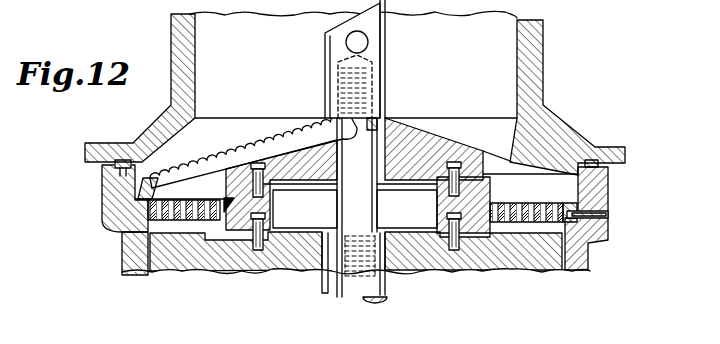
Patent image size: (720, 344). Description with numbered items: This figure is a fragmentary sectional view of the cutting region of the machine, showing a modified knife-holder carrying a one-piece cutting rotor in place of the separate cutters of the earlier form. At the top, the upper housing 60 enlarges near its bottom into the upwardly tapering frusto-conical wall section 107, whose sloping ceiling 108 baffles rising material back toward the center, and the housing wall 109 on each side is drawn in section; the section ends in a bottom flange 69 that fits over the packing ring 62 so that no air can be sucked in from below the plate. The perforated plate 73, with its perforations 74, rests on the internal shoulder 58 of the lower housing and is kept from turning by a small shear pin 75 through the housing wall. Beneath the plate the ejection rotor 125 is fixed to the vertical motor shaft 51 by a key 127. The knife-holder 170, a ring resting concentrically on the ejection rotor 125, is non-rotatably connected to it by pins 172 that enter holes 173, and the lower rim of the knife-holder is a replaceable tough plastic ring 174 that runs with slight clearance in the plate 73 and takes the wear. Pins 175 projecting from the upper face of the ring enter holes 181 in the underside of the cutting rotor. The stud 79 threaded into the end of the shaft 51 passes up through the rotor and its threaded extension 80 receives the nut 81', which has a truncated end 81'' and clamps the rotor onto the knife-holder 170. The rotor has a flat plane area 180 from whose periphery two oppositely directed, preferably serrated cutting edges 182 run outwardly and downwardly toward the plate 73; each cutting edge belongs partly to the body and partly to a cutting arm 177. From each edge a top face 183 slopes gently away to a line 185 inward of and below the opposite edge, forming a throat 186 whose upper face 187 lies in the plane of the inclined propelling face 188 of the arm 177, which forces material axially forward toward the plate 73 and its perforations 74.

The housing 60 is at (541, 56).
The frusto-conical wall section 107 is at (157, 118).
The sloping ceiling 108 is at (183, 134).
The inclined wall portion 109 is at (134, 138).
The bottom flange 69 is at (85, 152).
The packing ring 62 is at (101, 171).
The cutting arm 177 is at (142, 186).
The inclined propelling face 188 is at (101, 214).
The internal shoulder 58 is at (122, 238).
The upper face of throat 187 is at (243, 147).
The cutting edge 182 is at (254, 143).
The throat 186 is at (274, 140).
The line 185 is at (293, 135).
The nut 81' is at (379, 65).
The truncated end 81'' is at (318, 36).
The threaded extension 80 is at (387, 62).
The plane area 180 is at (390, 117).
The top face 183 is at (447, 134).
The hole 181 is at (456, 157).
The pin 175 is at (232, 179).
The knife-holder 170 is at (281, 201).
The hole 173 is at (279, 206).
The stud 79 is at (358, 217).
The plastic ring 174 is at (445, 203).
The plate 73 is at (518, 204).
The perforations 74 is at (535, 206).
The shear pin 75 is at (608, 214).
The pin 172 is at (260, 253).
The key 127 is at (322, 282).
The motor shaft 51 is at (342, 291).
The ejection rotor 125 is at (440, 252).